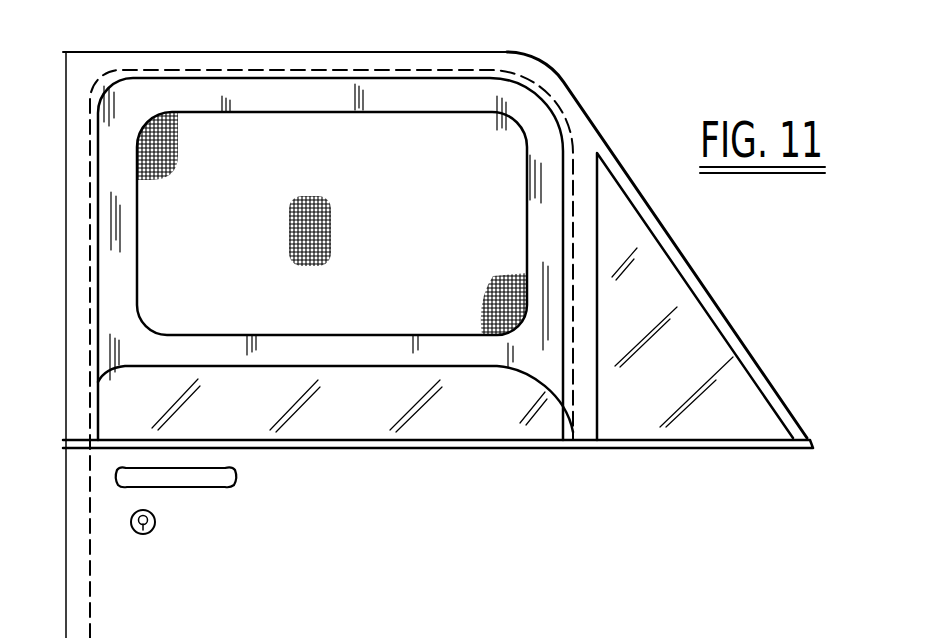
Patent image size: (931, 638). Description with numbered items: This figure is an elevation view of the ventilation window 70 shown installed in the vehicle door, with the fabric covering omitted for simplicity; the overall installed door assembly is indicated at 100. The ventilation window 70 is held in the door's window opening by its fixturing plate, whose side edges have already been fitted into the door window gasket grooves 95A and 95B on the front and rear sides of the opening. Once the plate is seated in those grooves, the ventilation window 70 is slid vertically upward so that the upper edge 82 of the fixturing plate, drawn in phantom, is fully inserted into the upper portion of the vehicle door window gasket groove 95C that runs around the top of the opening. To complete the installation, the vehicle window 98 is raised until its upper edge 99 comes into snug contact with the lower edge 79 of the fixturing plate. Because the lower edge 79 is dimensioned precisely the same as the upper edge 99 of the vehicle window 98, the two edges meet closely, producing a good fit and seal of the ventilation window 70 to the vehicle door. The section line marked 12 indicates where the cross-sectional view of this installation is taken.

The vehicle door assembly 100 is at (729, 264).
The upper edge 82 is at (425, 72).
The door window gasket groove 95C is at (368, 72).
The door window gasket groove 95A is at (92, 300).
The door window gasket groove 95B is at (569, 300).
The ventilation window 70 is at (512, 147).
The lower edge 79 is at (320, 365).
The upper edge 99 is at (386, 367).
The vehicle window 98 is at (493, 412).
The section line 12 is at (47, 212).